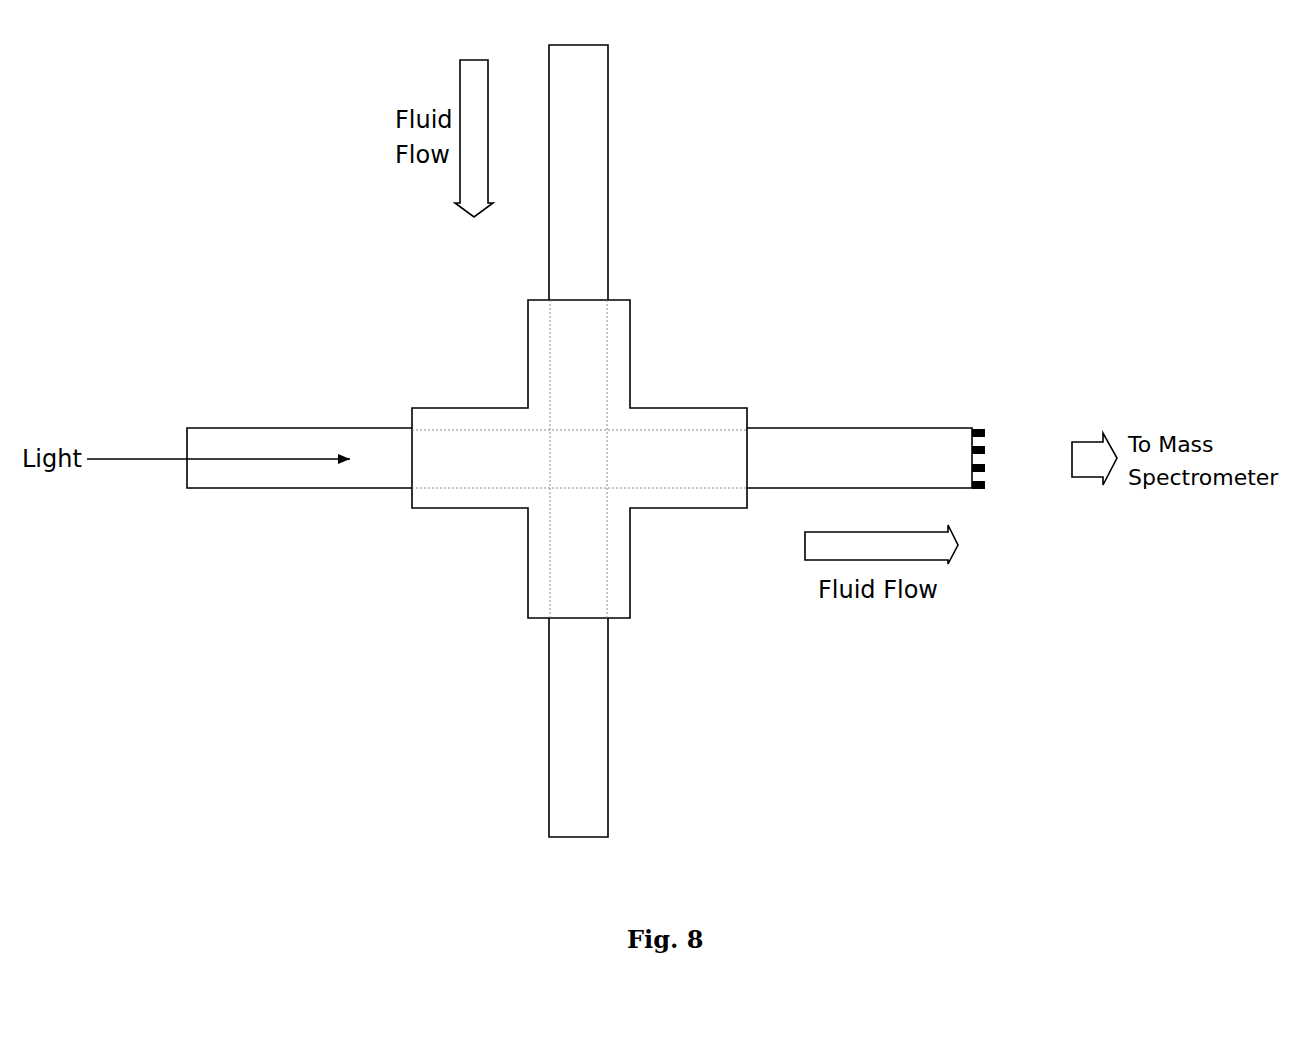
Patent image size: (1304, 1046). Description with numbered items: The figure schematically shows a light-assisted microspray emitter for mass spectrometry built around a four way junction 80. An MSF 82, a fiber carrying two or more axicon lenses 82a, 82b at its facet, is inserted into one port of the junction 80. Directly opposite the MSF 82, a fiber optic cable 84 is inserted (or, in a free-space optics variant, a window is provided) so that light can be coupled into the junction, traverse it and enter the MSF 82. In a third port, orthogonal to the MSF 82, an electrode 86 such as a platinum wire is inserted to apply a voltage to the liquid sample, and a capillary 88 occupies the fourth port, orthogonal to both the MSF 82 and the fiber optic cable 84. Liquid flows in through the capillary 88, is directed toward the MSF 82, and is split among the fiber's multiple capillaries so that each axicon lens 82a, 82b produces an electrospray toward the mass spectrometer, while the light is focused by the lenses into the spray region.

The four way junction 80 is at (652, 408).
The MSF 82 is at (840, 428).
The axicon lens 82a is at (980, 433).
The axicon lens 82b is at (982, 450).
The fiber optic cable 84 is at (303, 490).
The electrode 86 is at (608, 722).
The capillary 88 is at (608, 180).